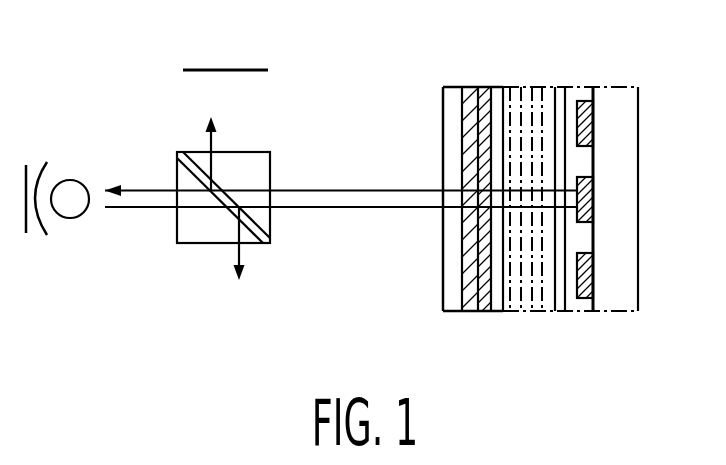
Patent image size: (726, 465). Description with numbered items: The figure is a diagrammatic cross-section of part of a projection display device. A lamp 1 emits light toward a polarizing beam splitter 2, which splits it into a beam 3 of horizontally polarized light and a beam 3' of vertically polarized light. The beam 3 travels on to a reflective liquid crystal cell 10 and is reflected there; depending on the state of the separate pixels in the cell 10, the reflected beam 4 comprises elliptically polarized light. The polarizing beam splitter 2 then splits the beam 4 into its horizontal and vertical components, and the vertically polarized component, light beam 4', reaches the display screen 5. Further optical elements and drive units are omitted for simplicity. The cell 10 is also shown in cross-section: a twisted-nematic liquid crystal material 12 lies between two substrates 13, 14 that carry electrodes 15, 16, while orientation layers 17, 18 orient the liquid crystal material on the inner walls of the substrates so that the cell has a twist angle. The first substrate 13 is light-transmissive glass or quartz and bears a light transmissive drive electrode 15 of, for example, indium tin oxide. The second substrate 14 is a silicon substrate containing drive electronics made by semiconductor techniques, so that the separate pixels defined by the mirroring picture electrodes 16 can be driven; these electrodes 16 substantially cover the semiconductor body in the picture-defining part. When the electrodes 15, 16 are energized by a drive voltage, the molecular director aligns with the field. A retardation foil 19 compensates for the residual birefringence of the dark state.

The lamp 1 is at (70, 218).
The polarizing beam splitter 2 is at (197, 243).
The beam of horizontally polarized light 3 is at (341, 240).
The beam of vertically polarized light 3' is at (264, 243).
The reflected beam 4 is at (341, 164).
The vertically polarized component light beam 4' is at (183, 153).
The display screen 5 is at (258, 68).
The reflective liquid crystal cell 10 is at (535, 233).
The twisted-nematic liquid crystal material 12 is at (527, 87).
The first substrate 13 is at (470, 312).
The second substrate 14 is at (632, 87).
The drive electrode 15 is at (488, 87).
The picture electrodes 16 is at (594, 123).
The orientation layer 17 is at (493, 312).
The orientation layer 18 is at (559, 87).
The retardation foil 19 is at (452, 104).